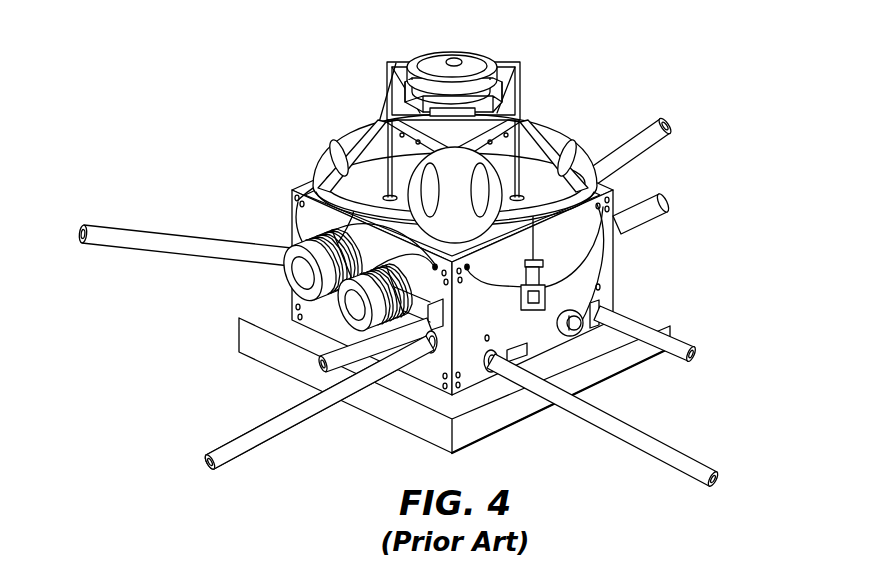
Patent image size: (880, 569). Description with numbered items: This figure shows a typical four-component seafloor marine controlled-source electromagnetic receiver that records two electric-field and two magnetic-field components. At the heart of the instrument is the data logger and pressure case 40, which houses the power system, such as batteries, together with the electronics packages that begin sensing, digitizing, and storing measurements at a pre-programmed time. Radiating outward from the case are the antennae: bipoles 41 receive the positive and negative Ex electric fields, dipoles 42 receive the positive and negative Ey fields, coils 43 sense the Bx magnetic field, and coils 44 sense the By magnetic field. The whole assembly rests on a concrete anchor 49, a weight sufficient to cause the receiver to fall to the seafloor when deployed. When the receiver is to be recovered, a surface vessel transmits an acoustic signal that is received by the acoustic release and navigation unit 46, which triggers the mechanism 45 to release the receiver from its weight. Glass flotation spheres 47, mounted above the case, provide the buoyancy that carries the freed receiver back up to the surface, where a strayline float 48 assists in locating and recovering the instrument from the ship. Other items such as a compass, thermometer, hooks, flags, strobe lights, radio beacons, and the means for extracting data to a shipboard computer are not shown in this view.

The data logger and pressure case 40 is at (616, 290).
The bipoles 41 is at (648, 128).
The dipoles 42 is at (163, 230).
The coils 43 is at (660, 195).
The coils 44 is at (688, 346).
The release mechanism 45 is at (603, 262).
The acoustic release and navigation unit 46 is at (300, 311).
The glass flotation spheres 47 is at (348, 124).
The strayline float 48 is at (452, 60).
The concrete anchor 49 is at (408, 432).